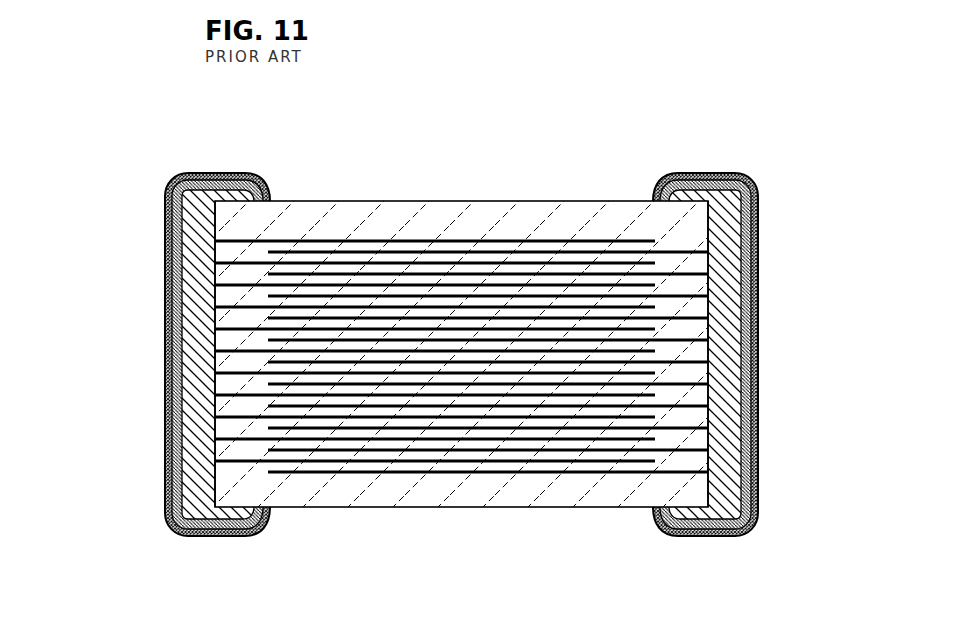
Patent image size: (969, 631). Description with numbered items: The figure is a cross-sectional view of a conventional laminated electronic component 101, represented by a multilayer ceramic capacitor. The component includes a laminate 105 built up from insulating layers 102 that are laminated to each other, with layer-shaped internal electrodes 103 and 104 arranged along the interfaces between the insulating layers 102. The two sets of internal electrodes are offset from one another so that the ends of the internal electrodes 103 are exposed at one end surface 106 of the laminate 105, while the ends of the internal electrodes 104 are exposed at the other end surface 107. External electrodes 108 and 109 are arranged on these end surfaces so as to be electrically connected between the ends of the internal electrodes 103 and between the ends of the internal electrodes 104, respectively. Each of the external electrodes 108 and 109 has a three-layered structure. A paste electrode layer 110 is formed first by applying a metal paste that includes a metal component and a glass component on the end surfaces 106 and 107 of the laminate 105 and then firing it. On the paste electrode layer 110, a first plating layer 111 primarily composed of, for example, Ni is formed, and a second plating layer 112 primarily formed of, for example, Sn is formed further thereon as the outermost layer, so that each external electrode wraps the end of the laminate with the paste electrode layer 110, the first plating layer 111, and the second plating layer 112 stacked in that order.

The laminated electronic component 101 is at (236, 103).
The insulating layers 102 is at (378, 453).
The internal electrodes 103 is at (373, 263).
The internal electrodes 104 is at (473, 274).
The laminate 105 is at (458, 352).
The end surface 106 is at (218, 341).
The end surface 107 is at (710, 323).
The external electrode 108 is at (85, 230).
The external electrode 109 is at (845, 180).
The paste electrode layer 110 is at (192, 248).
The first plating layer 111 is at (180, 277).
The second plating layer 112 is at (166, 311).